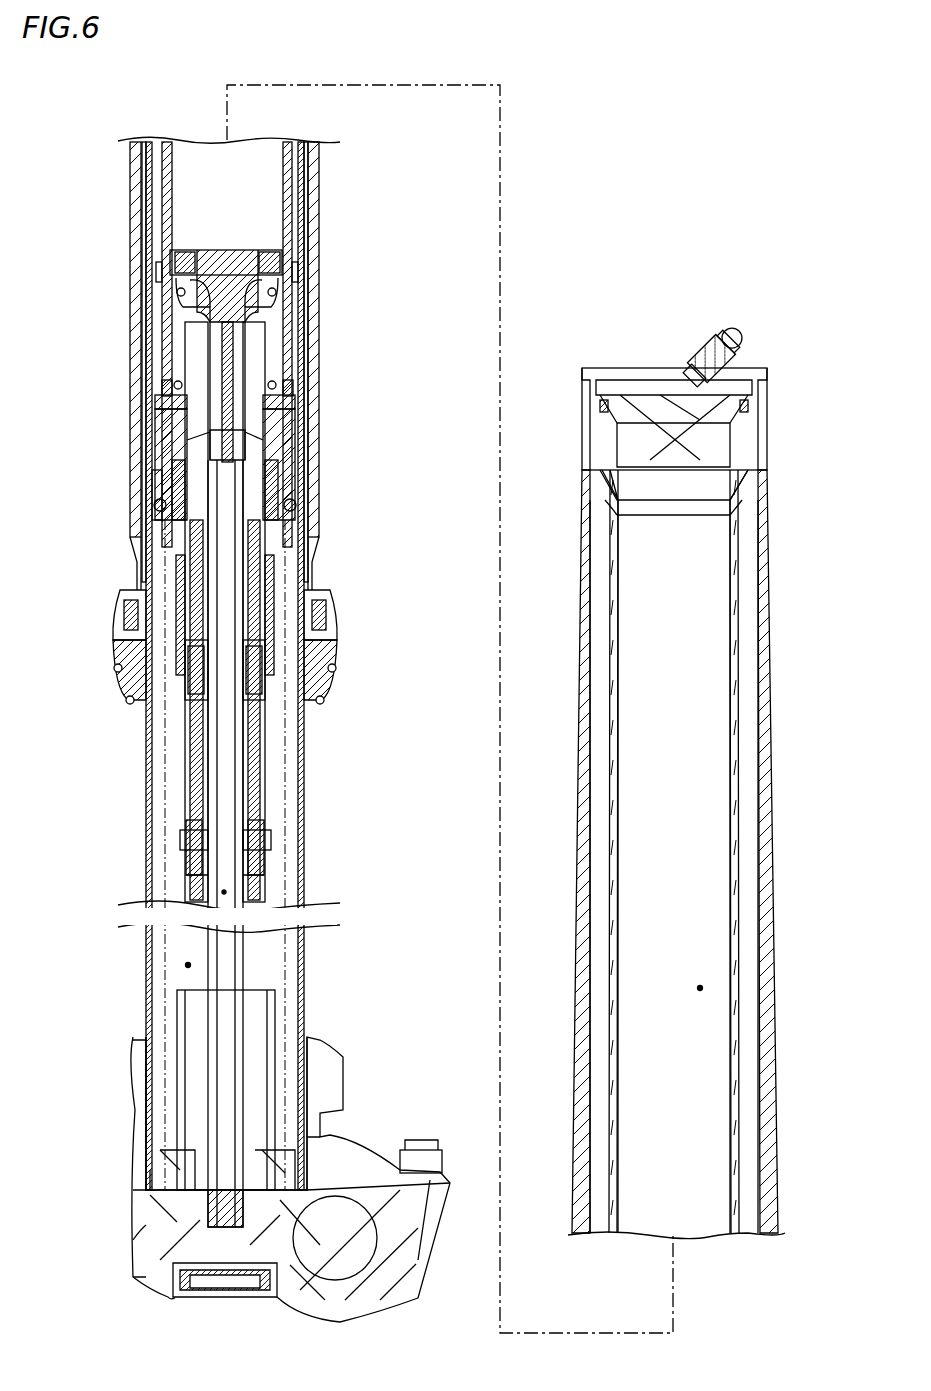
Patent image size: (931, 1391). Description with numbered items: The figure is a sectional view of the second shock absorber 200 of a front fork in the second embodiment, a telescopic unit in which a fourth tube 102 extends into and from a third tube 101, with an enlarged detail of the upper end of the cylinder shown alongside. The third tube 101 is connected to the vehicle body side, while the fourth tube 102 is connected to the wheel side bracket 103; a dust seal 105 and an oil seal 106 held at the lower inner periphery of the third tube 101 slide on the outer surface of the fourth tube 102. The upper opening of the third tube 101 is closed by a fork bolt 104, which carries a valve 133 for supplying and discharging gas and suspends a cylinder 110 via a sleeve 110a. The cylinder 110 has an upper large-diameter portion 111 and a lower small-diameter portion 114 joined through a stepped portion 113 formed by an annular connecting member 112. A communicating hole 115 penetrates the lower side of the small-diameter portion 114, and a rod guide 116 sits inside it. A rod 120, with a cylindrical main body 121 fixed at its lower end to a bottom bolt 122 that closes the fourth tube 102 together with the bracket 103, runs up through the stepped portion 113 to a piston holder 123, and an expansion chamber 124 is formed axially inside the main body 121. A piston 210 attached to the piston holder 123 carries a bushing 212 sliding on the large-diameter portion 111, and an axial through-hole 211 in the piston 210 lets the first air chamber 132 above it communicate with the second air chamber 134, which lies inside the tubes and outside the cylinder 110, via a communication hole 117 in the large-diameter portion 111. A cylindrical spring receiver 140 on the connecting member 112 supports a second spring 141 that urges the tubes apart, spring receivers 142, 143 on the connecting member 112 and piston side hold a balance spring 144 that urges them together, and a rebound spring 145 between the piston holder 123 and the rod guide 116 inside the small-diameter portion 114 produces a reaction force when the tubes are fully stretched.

The second shock absorber 200 is at (782, 150).
The third tube 101 is at (137, 218).
The fourth tube 102 is at (142, 800).
The bracket 103 is at (157, 1245).
The fork bolt 104 is at (637, 398).
The dust seal 105 is at (130, 688).
The oil seal 106 is at (135, 632).
The cylinder 110 is at (742, 705).
The sleeve 110a is at (770, 493).
The large-diameter portion 111 is at (143, 156).
The connecting member 112 is at (157, 445).
The stepped portion 113 is at (152, 400).
The small-diameter portion 114 is at (190, 575).
The communicating hole 115 is at (182, 703).
The rod guide 116 is at (305, 717).
The communication hole 117 is at (163, 345).
The rod 120 is at (253, 343).
The main body 121 is at (235, 956).
The bottom bolt 122 is at (190, 1277).
The piston holder 123 is at (273, 453).
The expansion chamber 124 is at (224, 892).
The first air chamber 132 is at (700, 988).
The valve 133 is at (712, 320).
The second air chamber 134 is at (188, 965).
The spring receiver 140 is at (310, 482).
The second spring 141 is at (152, 505).
The spring receiver 142 is at (287, 395).
The spring receiver 143 is at (157, 271).
The balance spring 144 is at (300, 385).
The rebound spring 145 is at (252, 642).
The piston 210 is at (217, 260).
The through-hole 211 is at (185, 260).
The bushing 212 is at (280, 275).